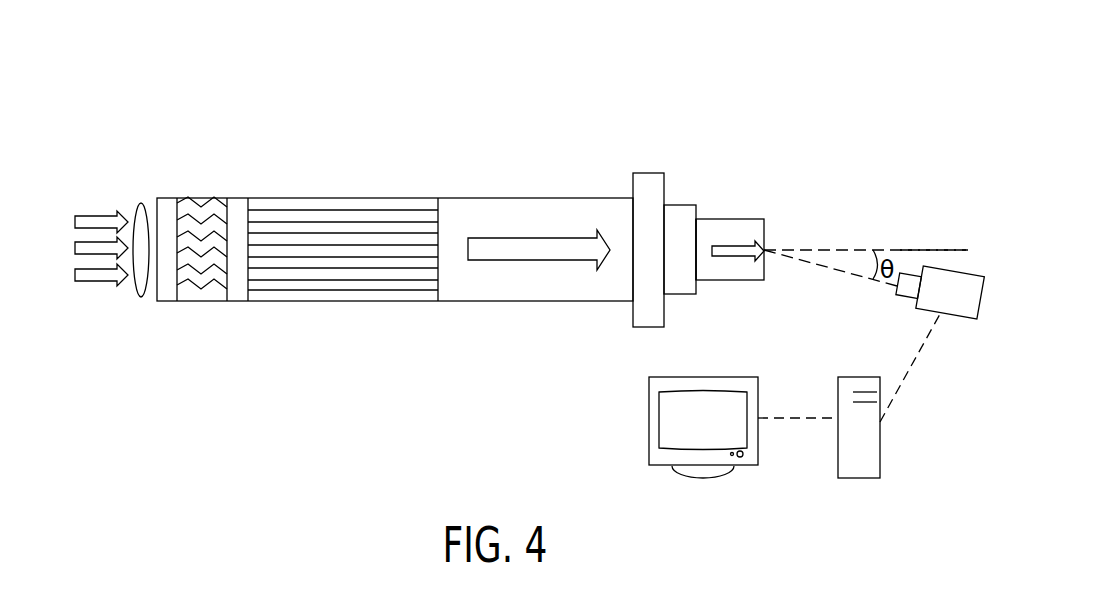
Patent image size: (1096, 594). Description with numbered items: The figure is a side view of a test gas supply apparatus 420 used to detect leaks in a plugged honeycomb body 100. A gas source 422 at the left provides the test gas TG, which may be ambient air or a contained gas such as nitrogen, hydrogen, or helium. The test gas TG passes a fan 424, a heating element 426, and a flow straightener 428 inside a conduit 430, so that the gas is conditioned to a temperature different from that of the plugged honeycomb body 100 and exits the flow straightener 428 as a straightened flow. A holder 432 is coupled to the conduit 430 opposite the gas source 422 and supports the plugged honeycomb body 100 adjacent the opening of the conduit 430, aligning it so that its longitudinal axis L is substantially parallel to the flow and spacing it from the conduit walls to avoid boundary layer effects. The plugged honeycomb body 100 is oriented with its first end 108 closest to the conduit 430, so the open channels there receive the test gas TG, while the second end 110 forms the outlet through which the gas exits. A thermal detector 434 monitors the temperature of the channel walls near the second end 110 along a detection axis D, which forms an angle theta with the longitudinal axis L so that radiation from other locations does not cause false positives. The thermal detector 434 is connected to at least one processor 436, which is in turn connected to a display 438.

The test gas supply apparatus 420 is at (738, 122).
The gas source 422 is at (100, 288).
The fan 424 is at (140, 208).
The heating element 426 is at (213, 205).
The flow straightener 428 is at (292, 213).
The conduit 430 is at (585, 198).
The holder 432 is at (675, 222).
The first end 108 is at (697, 230).
The plugged honeycomb body 100 is at (745, 228).
The second end 110 is at (765, 232).
The thermal detector 434 is at (950, 305).
The processor 436 is at (847, 393).
The display 438 is at (657, 420).
The test gas TG is at (505, 248).
The longitudinal axis L is at (923, 248).
The detection axis D is at (835, 272).